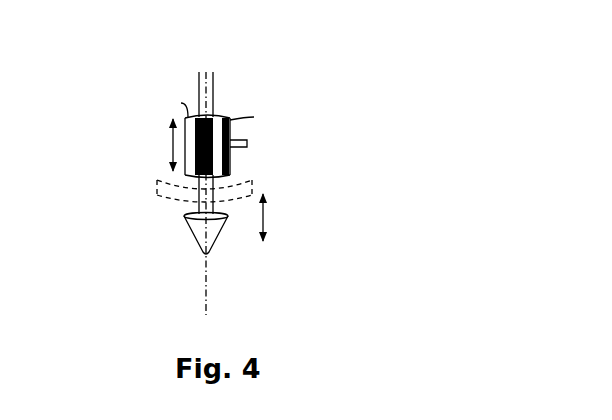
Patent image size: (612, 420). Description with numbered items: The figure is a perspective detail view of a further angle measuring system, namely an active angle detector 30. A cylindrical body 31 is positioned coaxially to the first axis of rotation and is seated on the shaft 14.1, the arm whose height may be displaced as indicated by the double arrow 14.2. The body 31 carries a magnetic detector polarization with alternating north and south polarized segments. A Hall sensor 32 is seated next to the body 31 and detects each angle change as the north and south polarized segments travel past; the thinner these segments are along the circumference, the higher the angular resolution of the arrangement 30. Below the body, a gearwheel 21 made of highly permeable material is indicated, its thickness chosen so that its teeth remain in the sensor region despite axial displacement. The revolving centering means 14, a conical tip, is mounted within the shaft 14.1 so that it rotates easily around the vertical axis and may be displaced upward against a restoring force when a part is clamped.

The active angle detector 30 is at (265, 195).
The shaft 14.1 is at (198, 115).
The cylindrical body 31 is at (218, 116).
The Hall sensor 32 is at (247, 141).
The gearwheel 21 is at (230, 158).
The revolving centering means 14 is at (188, 236).
The double arrow 14.2 is at (268, 230).